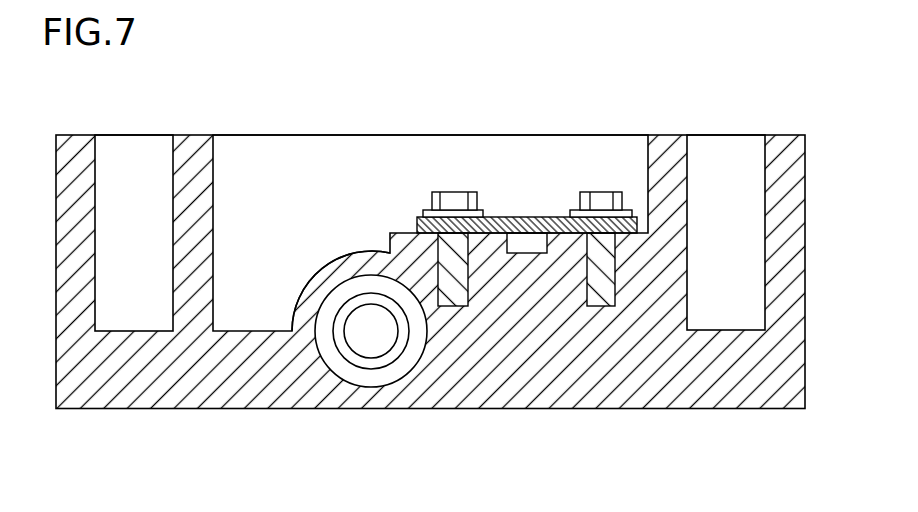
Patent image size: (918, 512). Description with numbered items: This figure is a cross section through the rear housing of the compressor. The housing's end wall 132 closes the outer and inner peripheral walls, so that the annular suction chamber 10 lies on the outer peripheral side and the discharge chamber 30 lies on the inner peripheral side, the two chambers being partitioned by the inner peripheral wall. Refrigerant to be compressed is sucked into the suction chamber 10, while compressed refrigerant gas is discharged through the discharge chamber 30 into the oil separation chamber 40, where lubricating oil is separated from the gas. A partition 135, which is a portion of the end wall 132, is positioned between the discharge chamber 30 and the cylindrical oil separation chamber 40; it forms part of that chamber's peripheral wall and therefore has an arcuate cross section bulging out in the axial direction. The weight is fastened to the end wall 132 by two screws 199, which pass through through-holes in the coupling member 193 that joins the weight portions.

The suction chamber 10 is at (125, 198).
The discharge chamber 30 is at (248, 198).
The oil separation chamber 40 is at (360, 350).
The end wall 132 is at (127, 383).
The partition 135 is at (325, 265).
The coupling member 193 is at (524, 224).
The screws 199 is at (445, 193).